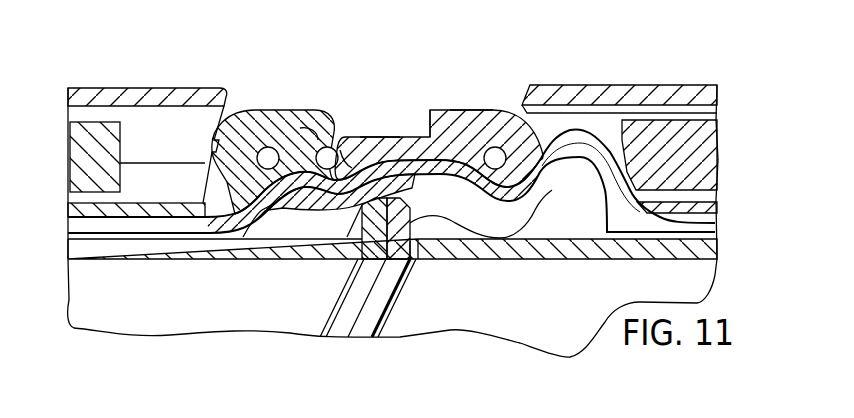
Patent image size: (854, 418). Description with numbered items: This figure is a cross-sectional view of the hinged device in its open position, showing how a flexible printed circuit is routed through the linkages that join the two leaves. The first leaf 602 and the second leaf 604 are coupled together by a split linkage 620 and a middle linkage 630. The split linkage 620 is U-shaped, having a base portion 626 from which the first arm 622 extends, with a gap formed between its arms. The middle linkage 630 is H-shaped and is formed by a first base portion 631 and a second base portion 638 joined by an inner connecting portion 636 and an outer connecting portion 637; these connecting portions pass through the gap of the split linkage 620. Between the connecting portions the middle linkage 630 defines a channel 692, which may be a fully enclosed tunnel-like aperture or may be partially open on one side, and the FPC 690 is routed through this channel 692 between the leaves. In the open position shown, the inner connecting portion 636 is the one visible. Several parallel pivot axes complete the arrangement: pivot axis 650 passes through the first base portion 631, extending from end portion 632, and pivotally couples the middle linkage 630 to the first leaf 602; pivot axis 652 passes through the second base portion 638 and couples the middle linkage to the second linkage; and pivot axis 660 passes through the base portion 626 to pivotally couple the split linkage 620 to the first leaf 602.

The first leaf 602 is at (580, 345).
The second leaf 604 is at (250, 312).
The split linkage 620 is at (252, 96).
The first arm 622 is at (428, 228).
The base portion 626 is at (304, 140).
The middle linkage 630 is at (481, 92).
The first base portion 631 is at (463, 124).
The end portion 632 is at (505, 224).
The inner connecting portion 636 is at (382, 136).
The outer connecting portion 637 is at (432, 210).
The second base portion 638 is at (347, 130).
The pivot axis 650 is at (500, 146).
The pivot axis 652 is at (333, 148).
The pivot axis 660 is at (272, 148).
The FPC 690 is at (140, 222).
The channel 692 is at (432, 118).